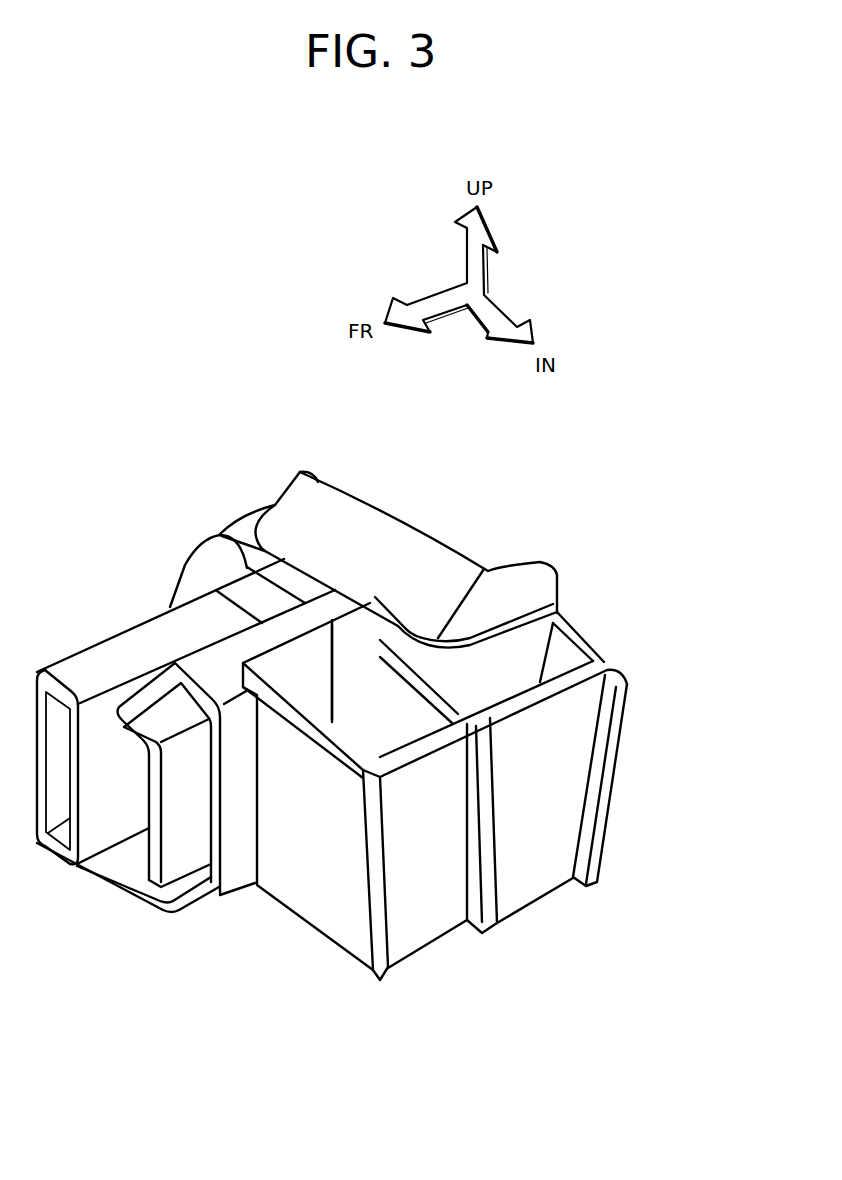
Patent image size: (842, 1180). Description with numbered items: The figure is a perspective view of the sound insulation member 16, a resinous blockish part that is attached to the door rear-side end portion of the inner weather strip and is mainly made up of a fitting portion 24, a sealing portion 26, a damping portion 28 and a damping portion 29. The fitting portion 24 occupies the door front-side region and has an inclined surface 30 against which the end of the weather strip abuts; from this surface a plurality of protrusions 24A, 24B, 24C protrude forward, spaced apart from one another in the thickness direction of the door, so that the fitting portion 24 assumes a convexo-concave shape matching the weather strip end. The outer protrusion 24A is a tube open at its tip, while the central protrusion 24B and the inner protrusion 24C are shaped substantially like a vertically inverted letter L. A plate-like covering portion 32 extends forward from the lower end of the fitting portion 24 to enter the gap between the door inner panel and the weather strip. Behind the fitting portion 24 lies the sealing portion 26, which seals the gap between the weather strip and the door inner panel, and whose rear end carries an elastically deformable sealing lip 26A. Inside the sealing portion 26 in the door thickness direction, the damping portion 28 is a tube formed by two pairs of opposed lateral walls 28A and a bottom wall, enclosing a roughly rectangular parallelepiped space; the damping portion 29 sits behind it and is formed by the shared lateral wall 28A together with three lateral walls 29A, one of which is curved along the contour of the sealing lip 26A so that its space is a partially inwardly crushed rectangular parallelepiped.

The sound insulation member 16 is at (178, 470).
The fitting portion 24 is at (73, 652).
The protrusion 24A is at (117, 847).
The protrusion 24B is at (190, 878).
The protrusion 24C is at (247, 890).
The sealing portion 26 is at (302, 468).
The sealing lip 26A is at (422, 530).
The damping portion 28 is at (430, 943).
The lateral wall 28A is at (300, 655).
The damping portion 29 is at (545, 893).
The lateral wall 29A is at (510, 648).
The inclined surface 30 is at (192, 580).
The covering portion 32 is at (167, 917).